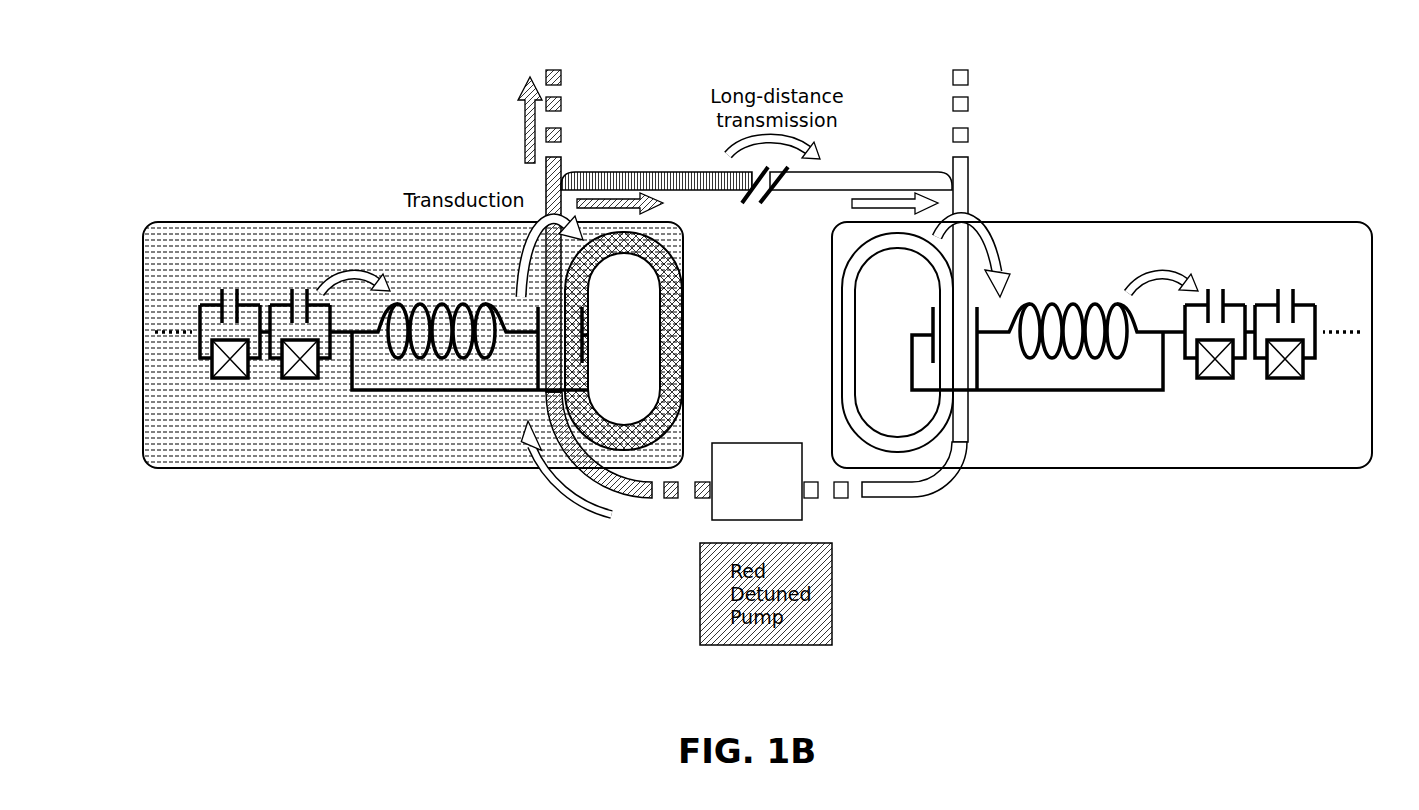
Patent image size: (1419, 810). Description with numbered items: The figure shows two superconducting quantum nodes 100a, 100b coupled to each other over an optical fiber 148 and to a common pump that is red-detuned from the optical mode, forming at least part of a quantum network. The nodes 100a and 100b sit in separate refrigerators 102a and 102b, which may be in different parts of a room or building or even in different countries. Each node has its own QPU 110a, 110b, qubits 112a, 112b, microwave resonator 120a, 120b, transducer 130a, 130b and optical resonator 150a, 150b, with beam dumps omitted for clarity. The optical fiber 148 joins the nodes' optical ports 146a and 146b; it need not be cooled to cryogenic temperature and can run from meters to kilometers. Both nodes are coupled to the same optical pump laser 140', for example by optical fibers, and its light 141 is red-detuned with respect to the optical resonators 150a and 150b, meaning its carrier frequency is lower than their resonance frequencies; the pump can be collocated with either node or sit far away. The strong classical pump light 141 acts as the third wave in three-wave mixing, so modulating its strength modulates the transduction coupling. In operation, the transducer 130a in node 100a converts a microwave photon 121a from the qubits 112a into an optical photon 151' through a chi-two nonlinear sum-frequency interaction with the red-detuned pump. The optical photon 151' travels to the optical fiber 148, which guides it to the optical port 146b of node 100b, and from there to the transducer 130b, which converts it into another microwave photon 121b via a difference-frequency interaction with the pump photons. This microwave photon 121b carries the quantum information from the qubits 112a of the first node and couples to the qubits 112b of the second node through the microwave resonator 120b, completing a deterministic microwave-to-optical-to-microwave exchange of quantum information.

The node 100a is at (386, 341).
The refrigerator 102a is at (188, 222).
The QPU 110a is at (242, 295).
The qubits 112a is at (251, 262).
The microwave photon 121a is at (359, 272).
The microwave resonator 120a is at (438, 368).
The transducer 130a is at (538, 366).
The light from pump laser 141 is at (565, 508).
The optical pump laser 140' is at (756, 456).
The optical port 146a is at (589, 172).
The optical fiber 148 is at (664, 185).
The optical photon 151' is at (757, 251).
The optical resonator 150a is at (651, 341).
The optical resonator 150b is at (861, 342).
The optical port 146b is at (870, 172).
The node 100b is at (1121, 341).
The refrigerator 102b is at (1308, 222).
The QPU 110b is at (1272, 301).
The qubits 112b is at (1271, 262).
The microwave photon 121b is at (1163, 272).
The microwave resonator 120b is at (1110, 362).
The transducer 130b is at (975, 363).